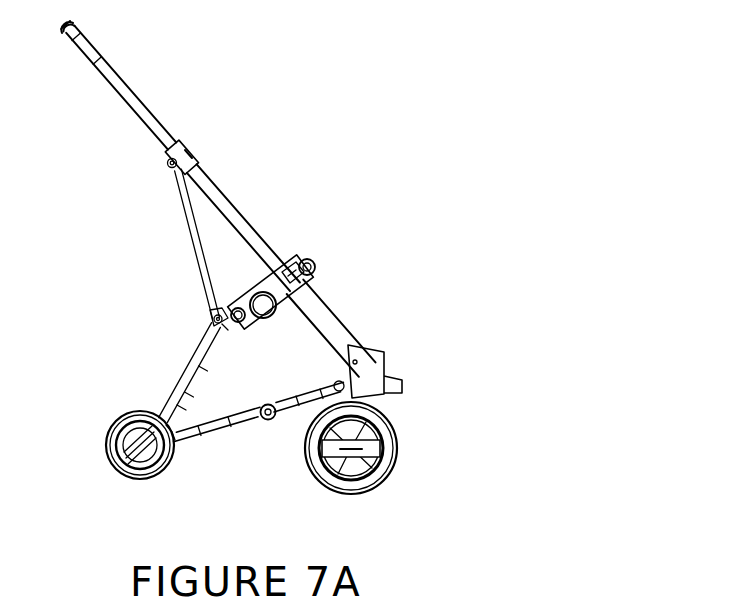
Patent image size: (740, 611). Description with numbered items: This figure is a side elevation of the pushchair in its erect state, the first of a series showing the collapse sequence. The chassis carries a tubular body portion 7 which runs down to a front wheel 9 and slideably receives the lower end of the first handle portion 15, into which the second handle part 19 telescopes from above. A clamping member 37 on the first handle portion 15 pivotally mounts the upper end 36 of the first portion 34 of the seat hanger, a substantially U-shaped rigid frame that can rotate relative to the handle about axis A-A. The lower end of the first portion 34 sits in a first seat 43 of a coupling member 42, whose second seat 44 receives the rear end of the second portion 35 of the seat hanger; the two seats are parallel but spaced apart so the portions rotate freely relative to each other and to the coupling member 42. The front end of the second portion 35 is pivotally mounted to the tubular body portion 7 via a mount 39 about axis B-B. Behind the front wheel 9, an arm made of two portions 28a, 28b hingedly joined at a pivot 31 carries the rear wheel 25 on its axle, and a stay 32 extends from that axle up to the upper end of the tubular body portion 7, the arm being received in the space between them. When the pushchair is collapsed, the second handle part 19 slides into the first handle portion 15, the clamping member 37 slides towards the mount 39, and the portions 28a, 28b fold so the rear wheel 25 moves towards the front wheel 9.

The second handle part 19 is at (123, 80).
The clamping member 37 is at (196, 150).
The upper end of first portion 36 is at (168, 165).
The first handle portion 15 is at (248, 218).
The first portion of seat hanger 34 is at (190, 228).
The first seat 43 is at (210, 308).
The coupling member 42 is at (214, 318).
The second seat 44 is at (216, 326).
The stay 32 is at (175, 393).
The rear wheel 25 is at (105, 463).
The first arm portion 28a is at (217, 420).
The second arm portion 28b is at (298, 400).
The pivot 31 is at (268, 422).
The second portion of seat hanger 35 is at (270, 326).
The mount 39 is at (300, 320).
The tubular body portion 7 is at (338, 328).
The front wheel 9 is at (385, 478).